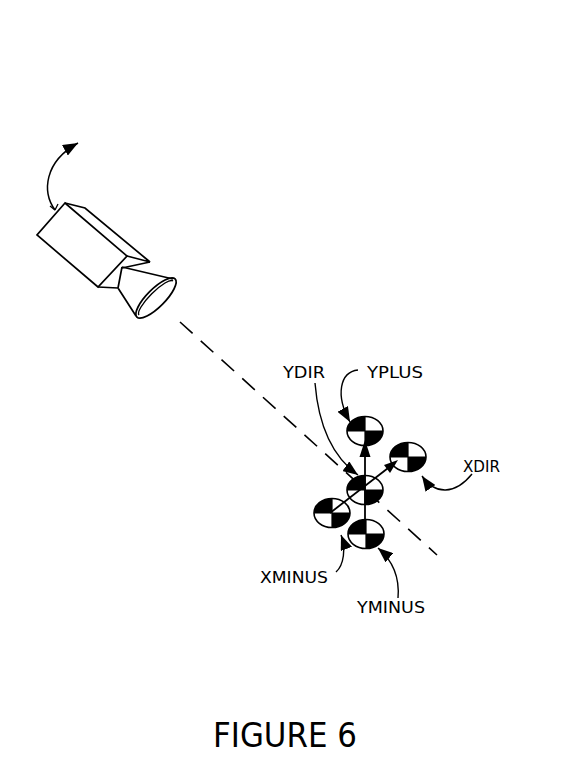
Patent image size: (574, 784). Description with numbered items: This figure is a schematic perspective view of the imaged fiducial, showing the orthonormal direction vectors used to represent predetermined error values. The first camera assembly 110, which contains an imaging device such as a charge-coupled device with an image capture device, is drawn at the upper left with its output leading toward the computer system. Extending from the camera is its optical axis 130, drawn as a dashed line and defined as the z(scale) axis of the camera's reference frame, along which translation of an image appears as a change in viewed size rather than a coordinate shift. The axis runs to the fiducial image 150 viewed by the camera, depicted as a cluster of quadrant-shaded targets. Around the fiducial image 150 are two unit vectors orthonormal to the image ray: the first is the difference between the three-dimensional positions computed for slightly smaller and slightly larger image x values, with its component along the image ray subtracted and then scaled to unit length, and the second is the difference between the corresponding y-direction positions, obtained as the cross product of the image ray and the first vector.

The camera assembly 110 is at (96, 217).
The camera optical axis 130 is at (176, 318).
The fiducial image 150 is at (385, 481).